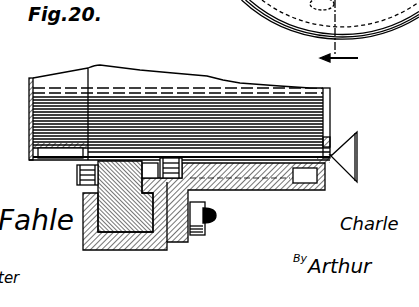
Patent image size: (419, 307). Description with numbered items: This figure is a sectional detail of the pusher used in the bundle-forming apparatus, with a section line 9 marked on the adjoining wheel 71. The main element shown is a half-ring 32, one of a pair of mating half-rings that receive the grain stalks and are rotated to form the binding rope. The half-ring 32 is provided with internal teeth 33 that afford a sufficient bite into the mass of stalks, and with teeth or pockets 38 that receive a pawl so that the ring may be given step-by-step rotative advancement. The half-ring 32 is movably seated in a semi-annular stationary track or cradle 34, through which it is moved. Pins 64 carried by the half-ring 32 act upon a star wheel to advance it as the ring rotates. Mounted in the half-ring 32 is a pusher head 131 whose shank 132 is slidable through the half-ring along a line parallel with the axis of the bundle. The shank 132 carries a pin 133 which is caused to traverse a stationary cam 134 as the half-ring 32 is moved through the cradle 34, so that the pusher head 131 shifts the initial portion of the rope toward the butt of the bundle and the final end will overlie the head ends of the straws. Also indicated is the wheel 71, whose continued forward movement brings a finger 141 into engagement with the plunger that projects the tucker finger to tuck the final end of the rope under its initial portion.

The section line 9 is at (339, 39).
The half-ring 32 is at (152, 87).
The internal teeth 33 is at (330, 122).
The cradle 34 is at (150, 252).
The teeth or pockets 38 is at (43, 162).
The pins 64 is at (77, 177).
The wheel 71 is at (244, 2).
The pusher head 131 is at (358, 158).
The shank 132 is at (232, 155).
The pin 133 is at (195, 203).
The stationary cam 134 is at (267, 177).
The finger 141 is at (301, 3).